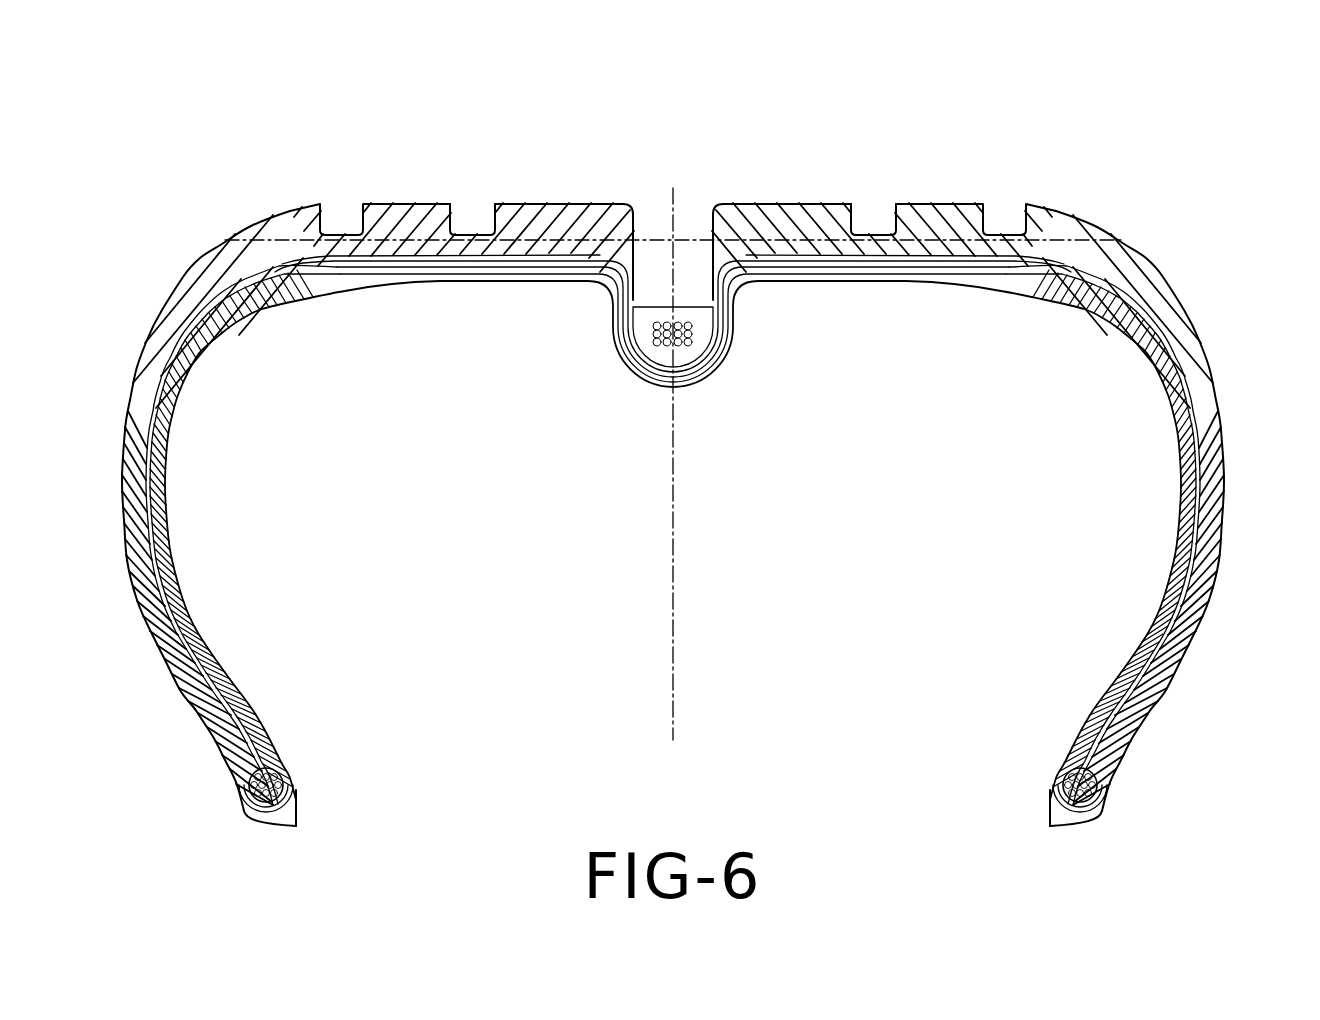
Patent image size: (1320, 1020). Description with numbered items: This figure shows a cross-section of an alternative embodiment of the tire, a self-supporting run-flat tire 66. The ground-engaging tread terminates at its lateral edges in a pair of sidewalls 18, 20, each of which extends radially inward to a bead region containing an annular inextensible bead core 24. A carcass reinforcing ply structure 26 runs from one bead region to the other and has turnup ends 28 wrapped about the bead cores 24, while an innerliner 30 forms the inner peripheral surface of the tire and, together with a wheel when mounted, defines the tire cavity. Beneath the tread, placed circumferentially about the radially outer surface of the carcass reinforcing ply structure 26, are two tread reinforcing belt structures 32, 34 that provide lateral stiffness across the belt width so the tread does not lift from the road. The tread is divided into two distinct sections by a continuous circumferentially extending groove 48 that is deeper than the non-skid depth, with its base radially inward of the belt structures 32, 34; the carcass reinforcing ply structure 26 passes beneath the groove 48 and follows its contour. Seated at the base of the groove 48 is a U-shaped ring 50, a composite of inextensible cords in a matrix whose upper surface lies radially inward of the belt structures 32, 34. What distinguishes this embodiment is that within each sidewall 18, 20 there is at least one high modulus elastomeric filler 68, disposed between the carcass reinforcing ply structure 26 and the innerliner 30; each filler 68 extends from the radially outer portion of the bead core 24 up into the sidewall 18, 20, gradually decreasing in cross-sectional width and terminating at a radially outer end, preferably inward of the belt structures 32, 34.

The sidewall portion 18 is at (123, 424).
The sidewall portion 20 is at (1226, 379).
The bead core 24 is at (248, 786).
The carcass reinforcing ply structure 26 is at (140, 537).
The turnup ends 28 is at (1140, 695).
The innerliner 30 is at (172, 568).
The tread reinforcing belt structure 32 is at (471, 228).
The tread reinforcing belt structure 34 is at (927, 228).
The groove 48 is at (711, 248).
The ring 50 is at (652, 290).
The self-supporting run-flat tire 66 is at (246, 198).
The high modulus elastomeric filler 68 is at (165, 399).